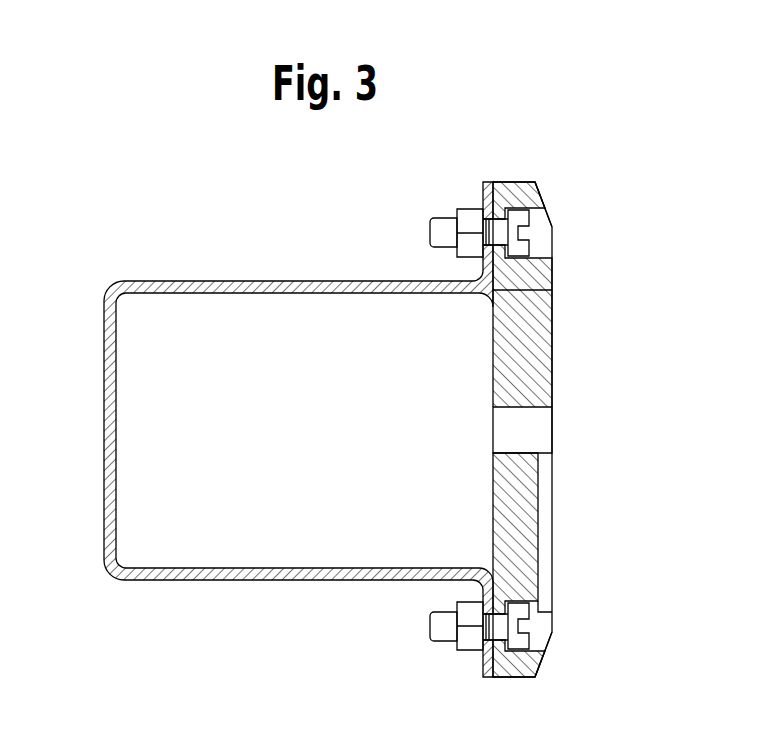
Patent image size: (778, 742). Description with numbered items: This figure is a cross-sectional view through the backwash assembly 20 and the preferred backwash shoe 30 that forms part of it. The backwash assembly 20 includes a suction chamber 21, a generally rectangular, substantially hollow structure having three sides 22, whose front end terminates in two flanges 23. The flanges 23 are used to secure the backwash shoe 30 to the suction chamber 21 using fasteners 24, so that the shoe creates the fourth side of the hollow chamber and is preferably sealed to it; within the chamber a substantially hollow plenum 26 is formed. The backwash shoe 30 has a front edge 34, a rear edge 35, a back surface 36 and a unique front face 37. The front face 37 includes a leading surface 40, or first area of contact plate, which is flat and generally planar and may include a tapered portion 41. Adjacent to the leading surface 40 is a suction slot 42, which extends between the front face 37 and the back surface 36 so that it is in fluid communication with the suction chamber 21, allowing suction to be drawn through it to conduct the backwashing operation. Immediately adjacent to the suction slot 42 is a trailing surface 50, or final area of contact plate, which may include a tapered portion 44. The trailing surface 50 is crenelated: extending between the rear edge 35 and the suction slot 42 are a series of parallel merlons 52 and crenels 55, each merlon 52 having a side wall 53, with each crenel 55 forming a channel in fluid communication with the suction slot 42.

The backwash assembly 20 is at (148, 225).
The suction chamber 21 is at (100, 532).
The sides 22 is at (298, 280).
The flanges 23 is at (483, 193).
The fasteners 24 is at (430, 229).
The plenum 26 is at (203, 541).
The backwash shoe 30 is at (570, 255).
The front edge 34 is at (508, 182).
The rear edge 35 is at (516, 678).
The back surface 36 is at (493, 340).
The front face 37 is at (558, 372).
The leading surface 40 is at (553, 315).
The tapered portion 41 is at (545, 192).
The suction slot 42 is at (523, 425).
The tapered portion 44 is at (542, 670).
The trailing surface 50 is at (560, 586).
The merlons 52 is at (552, 520).
The side wall 53 is at (545, 550).
The crenels 55 is at (538, 493).